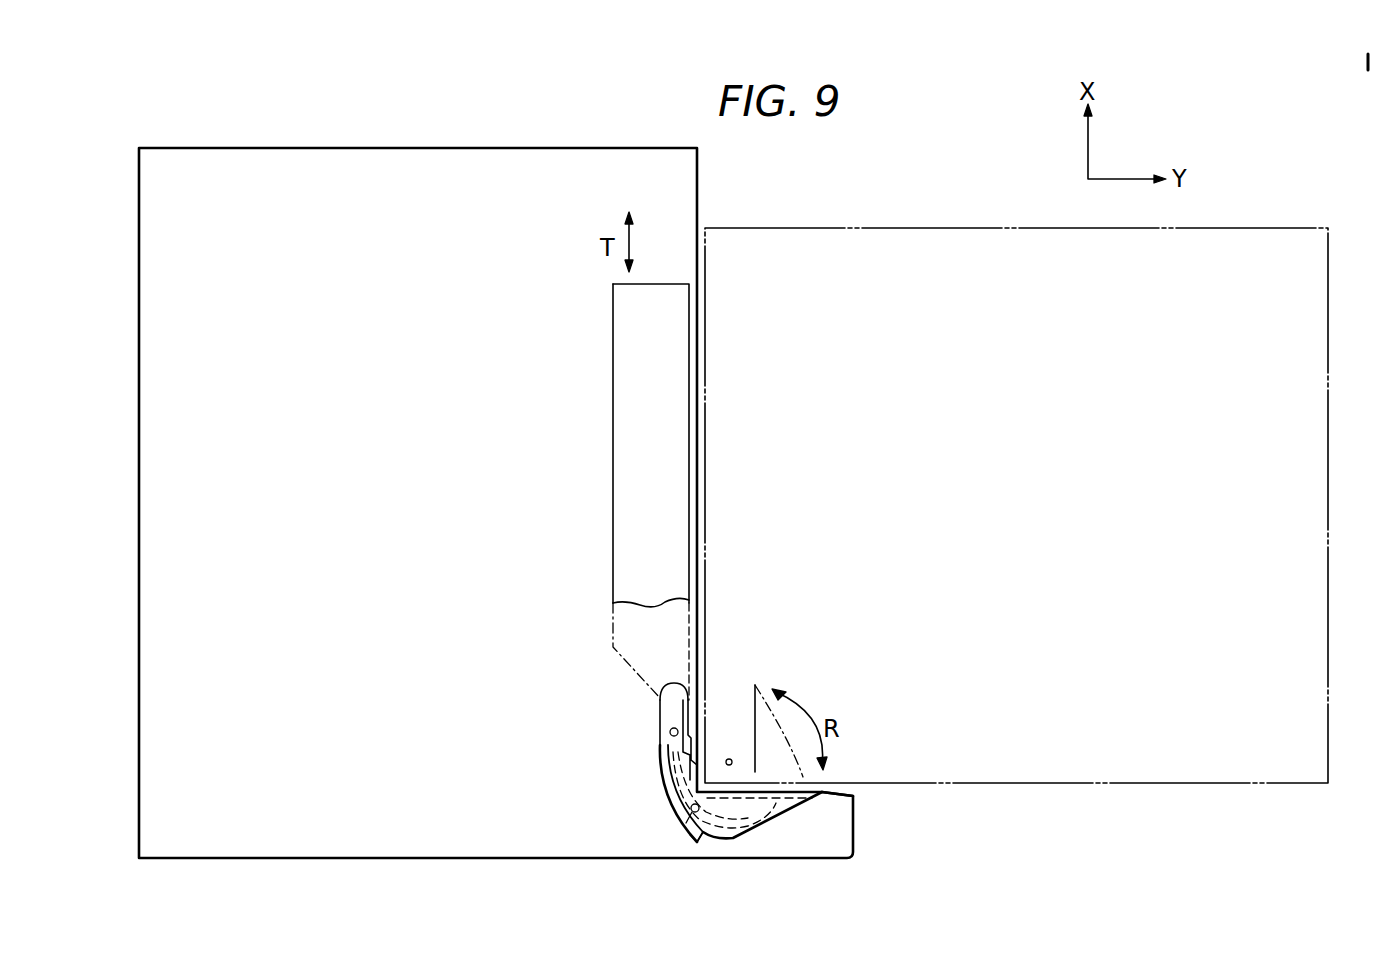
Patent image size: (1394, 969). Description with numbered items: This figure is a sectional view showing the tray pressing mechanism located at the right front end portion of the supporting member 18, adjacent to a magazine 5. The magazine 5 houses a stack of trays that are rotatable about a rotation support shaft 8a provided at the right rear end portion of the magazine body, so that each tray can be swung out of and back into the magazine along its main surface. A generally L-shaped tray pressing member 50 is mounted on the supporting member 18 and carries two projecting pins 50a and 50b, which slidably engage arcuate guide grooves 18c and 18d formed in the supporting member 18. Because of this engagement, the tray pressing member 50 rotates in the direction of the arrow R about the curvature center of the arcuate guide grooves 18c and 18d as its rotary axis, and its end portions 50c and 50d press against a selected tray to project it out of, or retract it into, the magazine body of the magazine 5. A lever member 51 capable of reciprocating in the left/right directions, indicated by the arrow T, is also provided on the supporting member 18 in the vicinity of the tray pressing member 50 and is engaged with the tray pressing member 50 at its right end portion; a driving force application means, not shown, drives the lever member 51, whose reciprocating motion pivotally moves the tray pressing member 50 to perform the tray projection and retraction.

The magazine 5 is at (1010, 773).
The rotation support shaft 8a is at (729, 758).
The supporting member 18 is at (689, 179).
The arcuate guide groove 18c is at (667, 807).
The arcuate guide groove 18d is at (770, 827).
The tray pressing member 50 is at (757, 788).
The pin 50a is at (672, 740).
The pin 50b is at (680, 826).
The end portion 50c is at (855, 797).
The end portion 50d is at (668, 713).
The lever member 51 is at (657, 292).